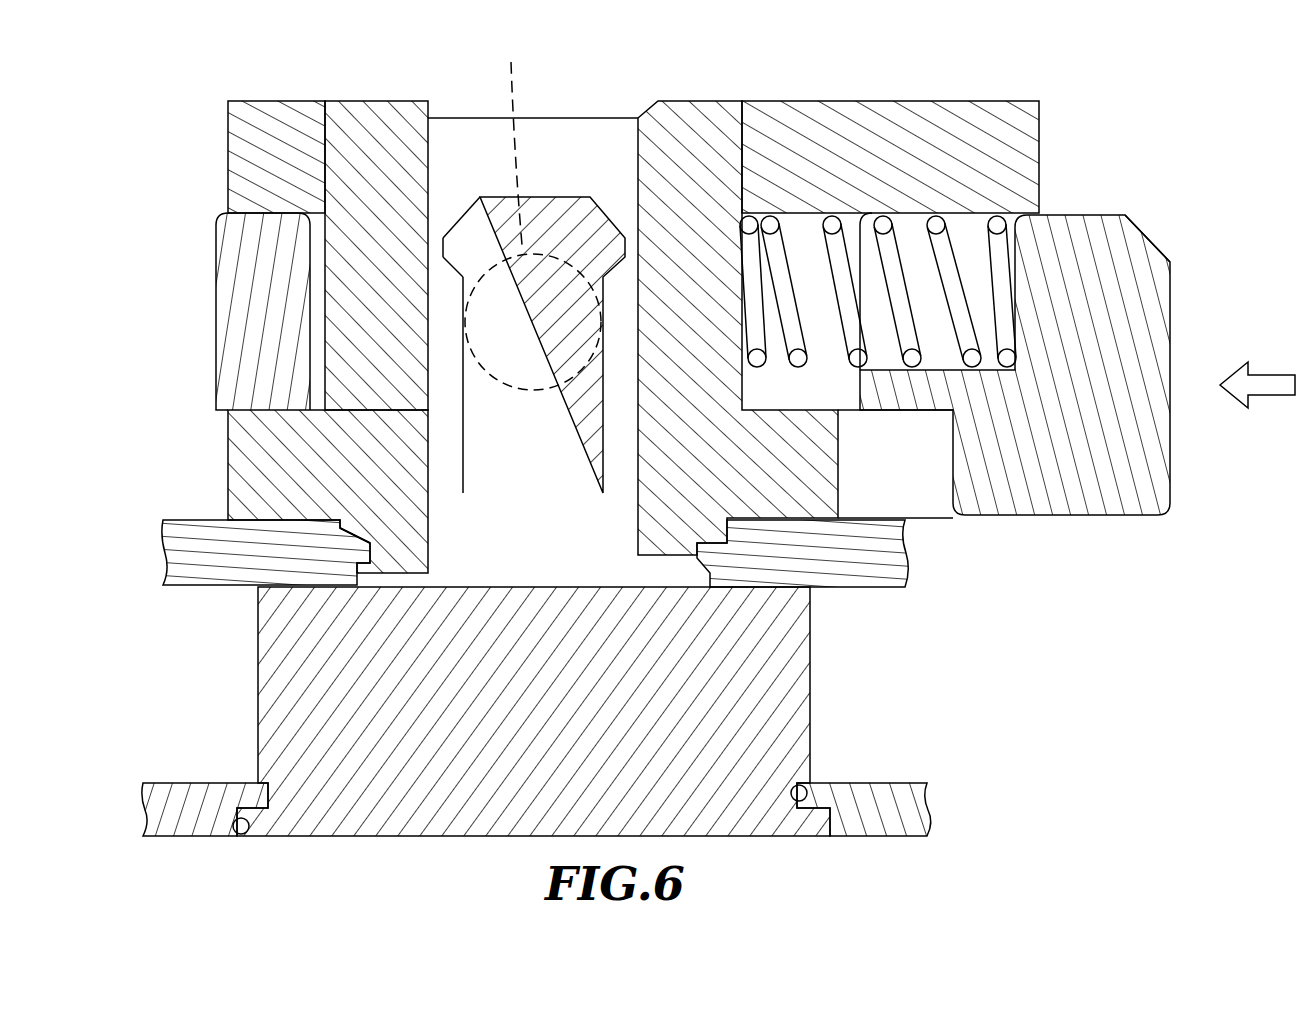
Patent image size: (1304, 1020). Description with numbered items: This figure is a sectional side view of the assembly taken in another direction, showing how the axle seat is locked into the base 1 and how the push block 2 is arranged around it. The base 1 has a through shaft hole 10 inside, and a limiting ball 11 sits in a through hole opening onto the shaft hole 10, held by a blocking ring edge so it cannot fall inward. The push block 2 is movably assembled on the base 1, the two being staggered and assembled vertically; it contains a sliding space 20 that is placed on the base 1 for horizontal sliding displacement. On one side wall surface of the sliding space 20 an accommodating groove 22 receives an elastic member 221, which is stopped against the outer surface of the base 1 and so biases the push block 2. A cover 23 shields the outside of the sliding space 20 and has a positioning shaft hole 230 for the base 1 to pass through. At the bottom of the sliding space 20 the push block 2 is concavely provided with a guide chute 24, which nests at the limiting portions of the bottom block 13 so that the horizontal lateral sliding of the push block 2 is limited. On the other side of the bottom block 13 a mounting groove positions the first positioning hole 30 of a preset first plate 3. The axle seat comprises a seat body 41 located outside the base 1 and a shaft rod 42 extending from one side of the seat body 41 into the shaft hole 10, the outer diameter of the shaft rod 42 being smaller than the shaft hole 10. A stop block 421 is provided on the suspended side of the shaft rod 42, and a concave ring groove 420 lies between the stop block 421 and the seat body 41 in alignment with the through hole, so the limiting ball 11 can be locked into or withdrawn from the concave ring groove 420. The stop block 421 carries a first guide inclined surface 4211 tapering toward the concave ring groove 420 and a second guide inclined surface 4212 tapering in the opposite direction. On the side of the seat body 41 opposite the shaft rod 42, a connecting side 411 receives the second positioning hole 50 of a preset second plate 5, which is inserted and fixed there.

The base 1 is at (690, 113).
The shaft hole 10 is at (600, 130).
The limiting ball 11 is at (510, 139).
The push block 2 is at (1183, 522).
The accommodating groove 22 is at (1020, 233).
The elastic member 221 is at (1000, 290).
The cover 23 is at (262, 117).
The positioning shaft hole 230 is at (329, 100).
The sliding space 20 is at (318, 238).
The guide chute 24 is at (217, 455).
The bottom block 13 is at (240, 437).
The first plate 3 is at (170, 565).
The first positioning hole 30 is at (345, 535).
The second guide inclined surface 4212 is at (465, 215).
The stop block 421 is at (462, 248).
The first guide inclined surface 4211 is at (460, 266).
The concave ring groove 420 is at (455, 360).
The shaft rod 42 is at (515, 413).
The seat body 41 is at (275, 665).
The connecting side 411 is at (798, 802).
The second plate 5 is at (170, 798).
The second positioning hole 50 is at (236, 825).